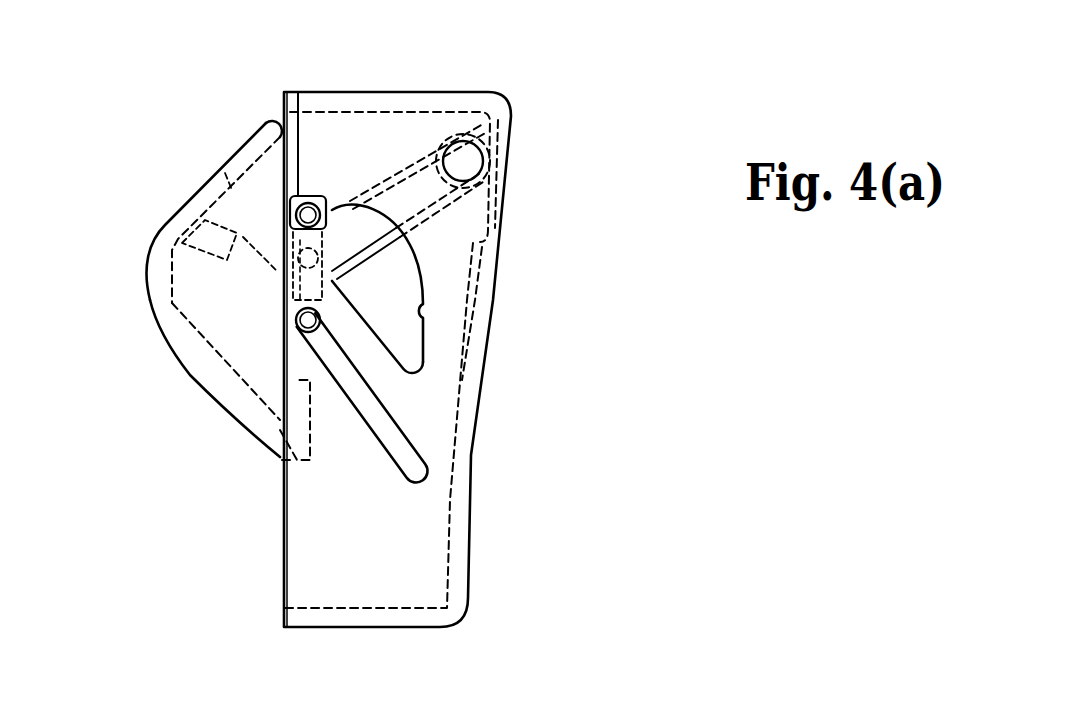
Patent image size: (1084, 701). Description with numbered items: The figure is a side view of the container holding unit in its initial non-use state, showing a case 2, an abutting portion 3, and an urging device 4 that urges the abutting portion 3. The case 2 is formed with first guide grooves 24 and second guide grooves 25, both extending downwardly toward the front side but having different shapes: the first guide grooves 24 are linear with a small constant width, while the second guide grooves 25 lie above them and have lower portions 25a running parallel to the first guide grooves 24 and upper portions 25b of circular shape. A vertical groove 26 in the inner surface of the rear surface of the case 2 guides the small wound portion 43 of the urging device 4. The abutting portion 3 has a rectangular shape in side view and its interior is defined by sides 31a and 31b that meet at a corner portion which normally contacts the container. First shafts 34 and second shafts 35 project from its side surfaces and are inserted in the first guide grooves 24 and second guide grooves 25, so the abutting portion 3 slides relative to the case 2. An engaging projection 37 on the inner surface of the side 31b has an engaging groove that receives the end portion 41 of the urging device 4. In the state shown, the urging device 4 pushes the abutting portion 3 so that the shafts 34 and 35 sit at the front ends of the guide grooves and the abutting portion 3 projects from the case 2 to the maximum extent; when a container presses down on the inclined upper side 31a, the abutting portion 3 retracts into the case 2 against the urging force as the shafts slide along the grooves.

The case 2 is at (450, 327).
The abutting portion 3 is at (181, 246).
The urging device 4 is at (334, 206).
The first guide grooves 24 is at (405, 446).
The second guide grooves 25 is at (519, 304).
The lower portions 25a is at (387, 342).
The upper portions 25b is at (422, 320).
The vertical groove 26 is at (500, 243).
The side 31a is at (242, 145).
The side 31b is at (187, 377).
The first shafts 34 is at (292, 326).
The second shafts 35 is at (323, 196).
The engaging projection 37 is at (165, 223).
The end portion 41 is at (220, 167).
The small wound portion 43 is at (511, 120).